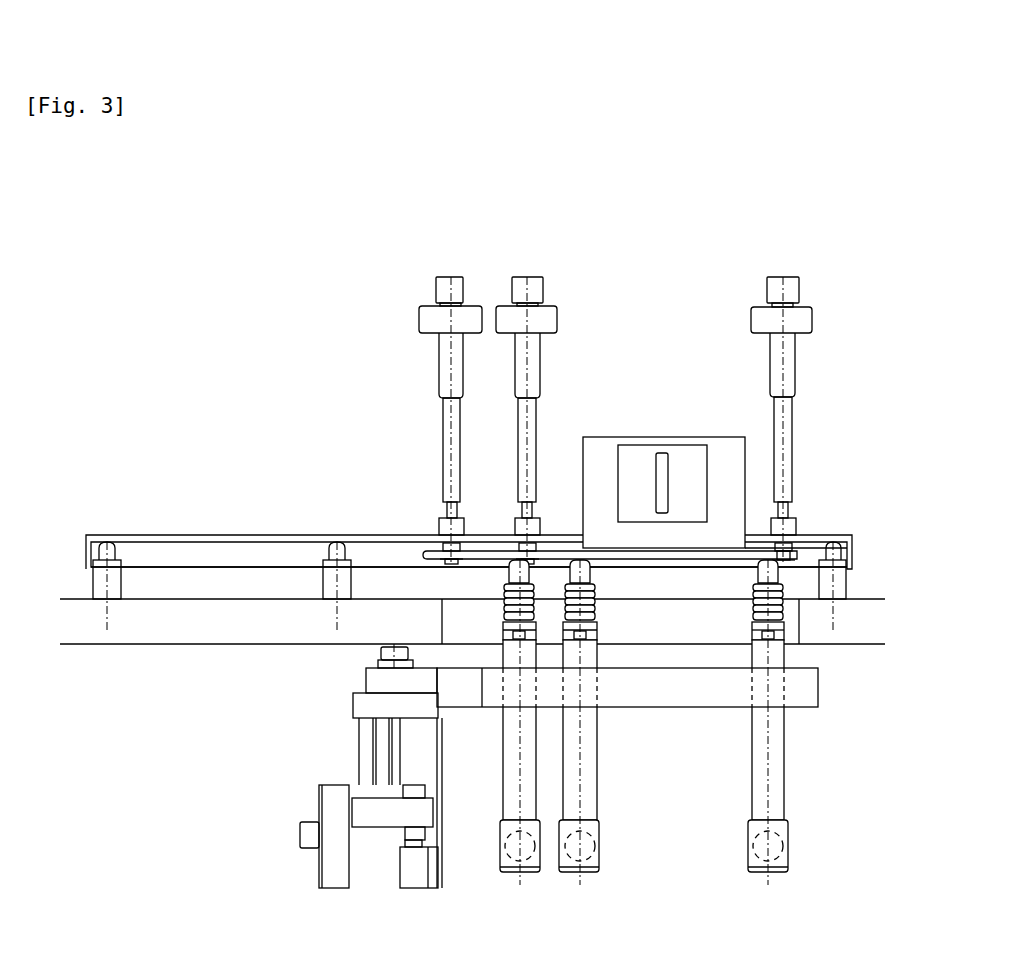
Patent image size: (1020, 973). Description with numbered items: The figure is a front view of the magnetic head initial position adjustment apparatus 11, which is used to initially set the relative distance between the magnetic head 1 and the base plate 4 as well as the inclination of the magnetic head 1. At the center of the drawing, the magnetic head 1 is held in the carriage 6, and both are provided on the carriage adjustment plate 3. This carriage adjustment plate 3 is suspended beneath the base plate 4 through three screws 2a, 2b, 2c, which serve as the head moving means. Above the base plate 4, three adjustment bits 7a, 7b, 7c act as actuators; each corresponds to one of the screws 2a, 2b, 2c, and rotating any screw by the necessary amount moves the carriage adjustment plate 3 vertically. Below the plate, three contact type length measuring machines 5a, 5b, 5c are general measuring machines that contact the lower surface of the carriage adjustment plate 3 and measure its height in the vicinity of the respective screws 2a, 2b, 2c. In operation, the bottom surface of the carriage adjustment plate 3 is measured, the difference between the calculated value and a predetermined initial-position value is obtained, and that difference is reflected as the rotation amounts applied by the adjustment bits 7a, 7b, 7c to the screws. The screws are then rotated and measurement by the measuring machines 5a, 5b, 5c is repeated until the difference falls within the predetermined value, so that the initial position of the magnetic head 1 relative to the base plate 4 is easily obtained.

The magnetic head initial position adjustment apparatus 11 is at (283, 327).
The magnetic head 1 is at (668, 473).
The screw 2a is at (522, 516).
The screw 2b is at (790, 527).
The screw 2c is at (438, 510).
The carriage adjustment plate 3 is at (423, 552).
The base plate 4 is at (205, 533).
The contact type length measuring machine 5a is at (590, 615).
The contact type length measuring machine 5b is at (787, 603).
The contact type length measuring machine 5c is at (527, 640).
The carriage 6 is at (663, 355).
The adjustment bit 7a is at (518, 500).
The adjustment bit 7b is at (778, 435).
The adjustment bit 7c is at (442, 507).